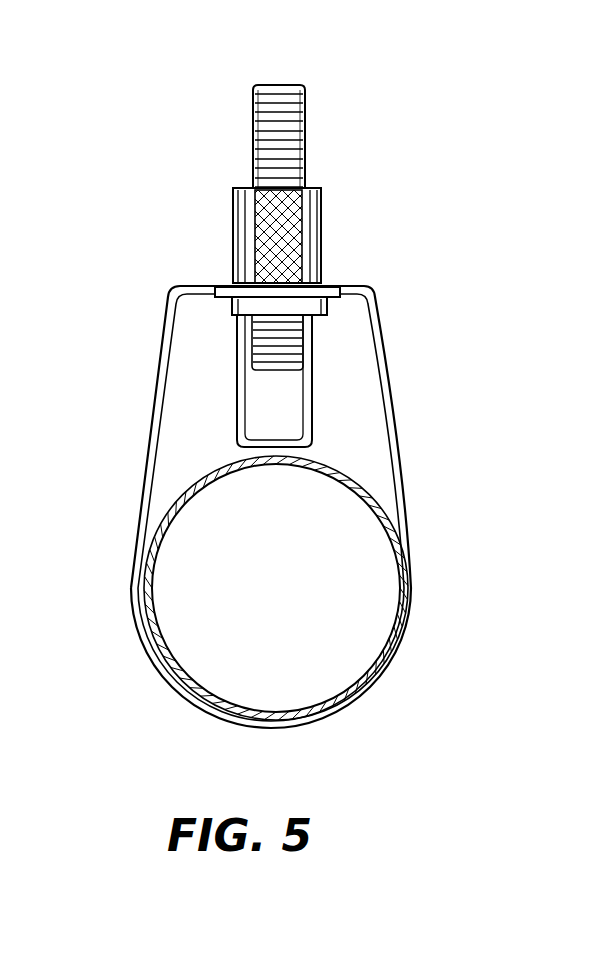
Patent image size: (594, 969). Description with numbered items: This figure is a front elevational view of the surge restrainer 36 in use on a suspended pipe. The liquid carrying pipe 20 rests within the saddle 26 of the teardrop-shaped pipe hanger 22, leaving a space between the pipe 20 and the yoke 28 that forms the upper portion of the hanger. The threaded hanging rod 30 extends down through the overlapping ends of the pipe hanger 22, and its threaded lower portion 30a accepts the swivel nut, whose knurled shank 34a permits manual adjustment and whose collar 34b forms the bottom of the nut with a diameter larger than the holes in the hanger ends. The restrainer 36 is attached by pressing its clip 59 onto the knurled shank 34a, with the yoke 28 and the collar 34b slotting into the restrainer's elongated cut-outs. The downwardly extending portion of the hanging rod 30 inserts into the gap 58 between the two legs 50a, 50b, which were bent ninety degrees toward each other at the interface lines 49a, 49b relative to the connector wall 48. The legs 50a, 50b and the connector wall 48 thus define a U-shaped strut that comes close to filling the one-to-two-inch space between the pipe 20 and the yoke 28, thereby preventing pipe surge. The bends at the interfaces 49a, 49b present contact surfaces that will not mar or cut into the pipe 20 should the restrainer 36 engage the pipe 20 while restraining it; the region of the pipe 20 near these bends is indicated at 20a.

The liquid carrying pipe 20 is at (136, 555).
The strap portion adjacent pipe 20a is at (293, 458).
The pipe hanger 22 is at (147, 443).
The saddle 26 is at (233, 720).
The yoke 28 is at (332, 288).
The hanging rod 30 is at (288, 110).
The lower portion of the hanging rod 30a is at (250, 340).
The knurled shank 34a is at (283, 238).
The collar 34b is at (378, 298).
The restrainer 36 is at (334, 420).
The connector wall 48 is at (253, 436).
The interface line 49a is at (310, 456).
The interface line 49b is at (243, 444).
The leg 50a is at (305, 350).
The leg 50b is at (250, 356).
The gap 58 is at (278, 398).
The clip 59 is at (321, 198).